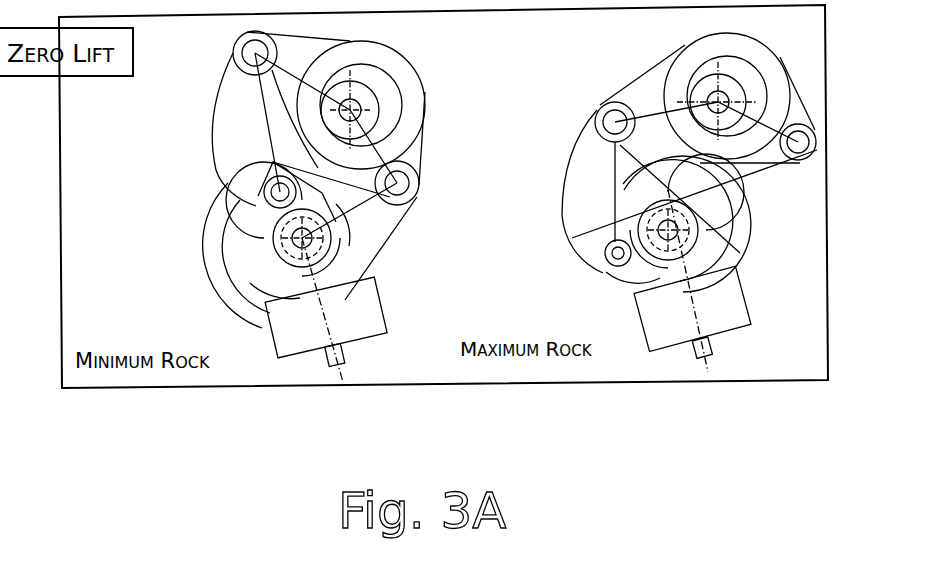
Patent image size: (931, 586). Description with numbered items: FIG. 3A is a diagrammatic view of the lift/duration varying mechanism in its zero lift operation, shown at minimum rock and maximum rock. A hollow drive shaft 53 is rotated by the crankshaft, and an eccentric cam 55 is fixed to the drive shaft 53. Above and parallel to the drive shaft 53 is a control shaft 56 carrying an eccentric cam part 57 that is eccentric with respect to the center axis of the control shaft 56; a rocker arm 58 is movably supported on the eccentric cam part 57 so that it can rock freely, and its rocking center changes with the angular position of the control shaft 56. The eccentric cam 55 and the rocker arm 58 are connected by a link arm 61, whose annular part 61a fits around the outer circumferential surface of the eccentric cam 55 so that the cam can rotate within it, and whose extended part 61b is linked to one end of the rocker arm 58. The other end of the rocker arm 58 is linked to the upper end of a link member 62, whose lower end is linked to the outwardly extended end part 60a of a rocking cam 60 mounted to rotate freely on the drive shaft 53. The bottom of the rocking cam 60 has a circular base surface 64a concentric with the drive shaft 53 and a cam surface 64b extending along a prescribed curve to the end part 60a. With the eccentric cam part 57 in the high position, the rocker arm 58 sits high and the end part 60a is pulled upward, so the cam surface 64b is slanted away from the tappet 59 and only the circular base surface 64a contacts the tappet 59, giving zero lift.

The drive shaft 53 is at (350, 248).
The eccentric cam 55 is at (212, 245).
The control shaft 56 is at (362, 90).
The eccentric cam part 57 is at (392, 88).
The rocker arm 58 is at (415, 115).
The tappet 59 is at (377, 305).
The rocking cam 60 is at (240, 212).
The end part 60a is at (600, 258).
The link arm 61 is at (372, 263).
The annular part 61a is at (215, 230).
The extended part 61b is at (385, 205).
The link member 62 is at (232, 88).
The circular base surface 64a is at (245, 283).
The cam surface 64b is at (605, 277).